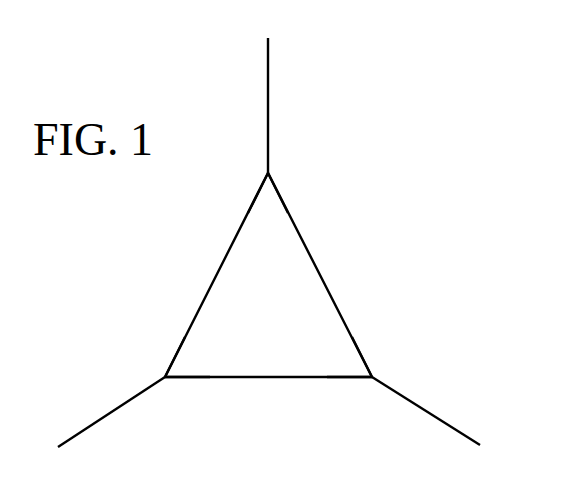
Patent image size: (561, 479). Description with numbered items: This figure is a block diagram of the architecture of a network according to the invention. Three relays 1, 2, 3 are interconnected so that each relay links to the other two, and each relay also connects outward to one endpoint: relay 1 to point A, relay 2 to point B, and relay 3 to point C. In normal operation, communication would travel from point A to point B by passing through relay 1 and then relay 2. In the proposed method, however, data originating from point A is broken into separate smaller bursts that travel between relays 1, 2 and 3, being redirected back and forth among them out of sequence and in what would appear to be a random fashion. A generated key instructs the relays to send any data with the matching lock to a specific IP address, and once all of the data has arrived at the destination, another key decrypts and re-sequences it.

The point A is at (268, 92).
The point B is at (97, 422).
The point C is at (435, 422).
The relay 1 is at (268, 193).
The relay 2 is at (187, 357).
The relay 3 is at (349, 357).